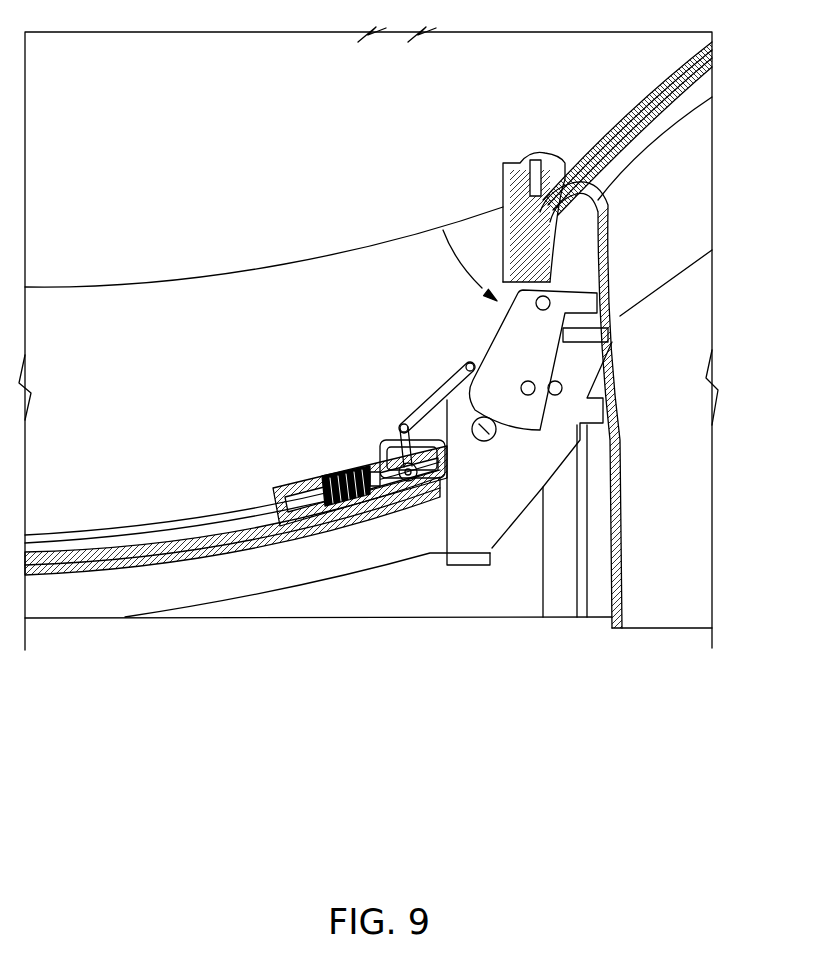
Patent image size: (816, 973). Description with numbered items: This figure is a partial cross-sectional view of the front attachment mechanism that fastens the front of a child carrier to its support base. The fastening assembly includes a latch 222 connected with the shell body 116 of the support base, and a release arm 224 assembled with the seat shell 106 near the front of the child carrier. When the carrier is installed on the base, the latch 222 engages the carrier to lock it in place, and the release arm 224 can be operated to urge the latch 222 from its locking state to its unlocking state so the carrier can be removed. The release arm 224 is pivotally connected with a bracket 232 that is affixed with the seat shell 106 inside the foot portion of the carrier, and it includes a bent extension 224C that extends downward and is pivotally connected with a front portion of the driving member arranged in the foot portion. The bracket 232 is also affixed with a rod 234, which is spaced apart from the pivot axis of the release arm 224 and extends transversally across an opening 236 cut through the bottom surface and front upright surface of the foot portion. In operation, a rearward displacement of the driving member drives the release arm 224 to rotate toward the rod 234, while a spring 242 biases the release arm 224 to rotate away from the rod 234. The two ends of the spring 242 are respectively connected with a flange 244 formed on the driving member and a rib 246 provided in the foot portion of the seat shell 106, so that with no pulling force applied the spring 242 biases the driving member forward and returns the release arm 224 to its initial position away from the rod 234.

The seat shell 106 is at (696, 63).
The shell body 116 is at (615, 252).
The latch 222 is at (500, 365).
The release arm 224 is at (440, 398).
The bent extension 224C is at (437, 500).
The bracket 232 is at (503, 187).
The rod 234 is at (492, 443).
The opening 236 is at (442, 253).
The spring 242 is at (328, 472).
The flange 244 is at (367, 452).
The rib 246 is at (348, 525).